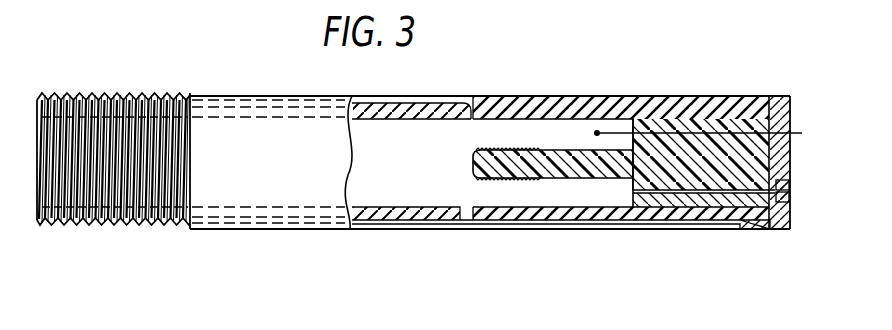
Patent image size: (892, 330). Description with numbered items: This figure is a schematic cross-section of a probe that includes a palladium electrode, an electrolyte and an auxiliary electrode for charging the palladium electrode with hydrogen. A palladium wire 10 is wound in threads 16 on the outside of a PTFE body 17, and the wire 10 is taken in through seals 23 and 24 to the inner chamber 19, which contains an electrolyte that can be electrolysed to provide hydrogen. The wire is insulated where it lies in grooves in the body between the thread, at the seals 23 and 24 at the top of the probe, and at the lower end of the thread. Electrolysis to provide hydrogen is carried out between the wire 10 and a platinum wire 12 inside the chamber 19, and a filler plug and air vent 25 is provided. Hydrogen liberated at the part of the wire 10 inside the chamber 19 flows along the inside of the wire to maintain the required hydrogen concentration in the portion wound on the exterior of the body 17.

The palladium wire 10 is at (88, 132).
The threads 16 is at (170, 95).
The inner chamber 19 is at (398, 137).
The PTFE body 17 is at (608, 93).
The seal 23 is at (535, 178).
The seal 24 is at (477, 152).
The platinum wire 12 is at (795, 130).
The filler plug and air vent 25 is at (786, 223).